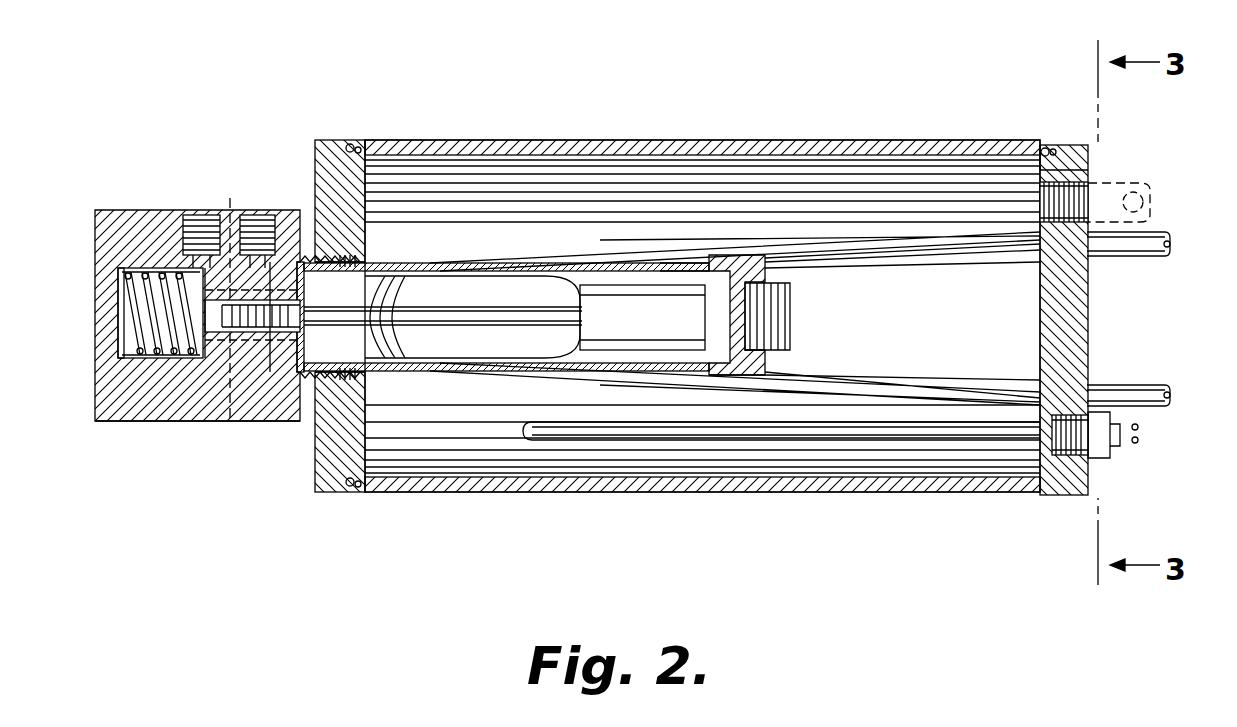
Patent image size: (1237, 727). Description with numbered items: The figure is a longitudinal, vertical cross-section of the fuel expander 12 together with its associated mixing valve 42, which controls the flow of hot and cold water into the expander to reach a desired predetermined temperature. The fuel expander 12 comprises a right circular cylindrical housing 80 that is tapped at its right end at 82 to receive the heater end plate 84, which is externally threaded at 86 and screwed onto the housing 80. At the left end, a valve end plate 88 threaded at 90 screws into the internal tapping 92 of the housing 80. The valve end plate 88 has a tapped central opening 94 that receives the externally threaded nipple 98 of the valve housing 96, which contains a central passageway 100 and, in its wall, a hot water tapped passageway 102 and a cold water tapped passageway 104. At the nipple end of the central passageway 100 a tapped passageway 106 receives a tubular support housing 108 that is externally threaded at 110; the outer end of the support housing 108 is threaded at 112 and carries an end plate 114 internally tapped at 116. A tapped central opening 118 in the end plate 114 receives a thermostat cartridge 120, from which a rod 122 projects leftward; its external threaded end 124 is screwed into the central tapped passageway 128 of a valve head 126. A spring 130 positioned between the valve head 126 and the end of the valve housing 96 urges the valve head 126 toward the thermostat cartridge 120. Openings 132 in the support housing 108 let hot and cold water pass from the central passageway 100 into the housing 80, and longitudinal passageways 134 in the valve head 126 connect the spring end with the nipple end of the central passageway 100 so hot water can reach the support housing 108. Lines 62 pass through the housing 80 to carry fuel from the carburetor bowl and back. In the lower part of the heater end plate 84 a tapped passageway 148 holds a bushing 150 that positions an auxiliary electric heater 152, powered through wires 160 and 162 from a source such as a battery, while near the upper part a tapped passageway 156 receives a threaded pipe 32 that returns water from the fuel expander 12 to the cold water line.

The fuel expander 12 is at (833, 128).
The threaded pipe 32 is at (1112, 183).
The mixing valve 42 is at (140, 437).
The lines 62 is at (878, 238).
The cylindrical housing 80 is at (390, 140).
The tapped right end 82 is at (1055, 148).
The heater end plate 84 is at (1068, 318).
The external threads 86 is at (1042, 148).
The valve end plate 88 is at (320, 455).
The threads 90 is at (335, 475).
The internal tapping 92 is at (352, 488).
The tapped central opening 94 is at (300, 420).
The valve housing 96 is at (100, 388).
The externally threaded nipple 98 is at (320, 400).
The central passageway 100 is at (135, 312).
The hot water tapped passageway 102 is at (200, 215).
The cold water tapped passageway 104 is at (255, 215).
The tapped passageway 106 is at (315, 140).
The tubular support housing 108 is at (415, 263).
The external threads 110 is at (362, 262).
The external threads 112 is at (695, 265).
The end plate 114 is at (860, 276).
The internal tapping 116 is at (745, 240).
The tapped central opening 118 is at (766, 355).
The thermostat cartridge 120 is at (642, 317).
The rod 122 is at (445, 316).
The external threaded end 124 is at (255, 370).
The valve head 126 is at (235, 360).
The central tapped passageway 128 is at (198, 358).
The spring 130 is at (120, 283).
The openings 132 is at (445, 338).
The longitudinal passageways 134 is at (172, 440).
The tapped passageway 148 is at (1045, 478).
The bushing 150 is at (1098, 460).
The auxiliary electric heater 152 is at (540, 422).
The tapped passageway 156 is at (1040, 210).
The wire 160 is at (1138, 427).
The wire 162 is at (1138, 440).